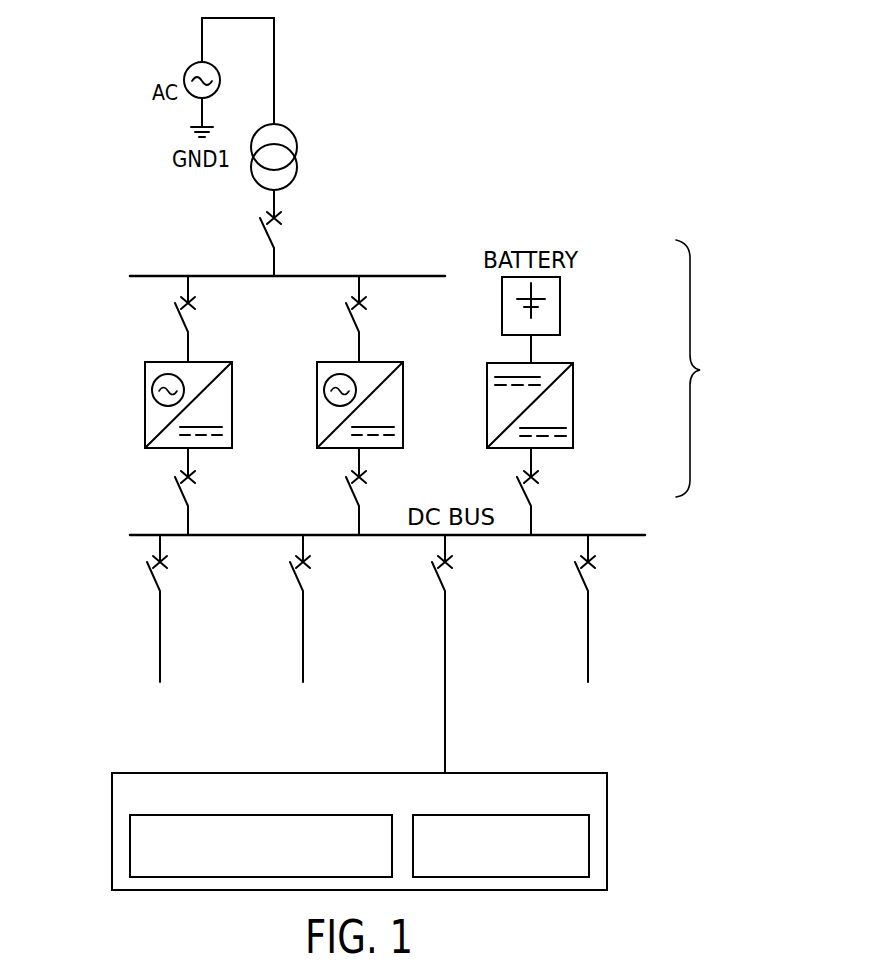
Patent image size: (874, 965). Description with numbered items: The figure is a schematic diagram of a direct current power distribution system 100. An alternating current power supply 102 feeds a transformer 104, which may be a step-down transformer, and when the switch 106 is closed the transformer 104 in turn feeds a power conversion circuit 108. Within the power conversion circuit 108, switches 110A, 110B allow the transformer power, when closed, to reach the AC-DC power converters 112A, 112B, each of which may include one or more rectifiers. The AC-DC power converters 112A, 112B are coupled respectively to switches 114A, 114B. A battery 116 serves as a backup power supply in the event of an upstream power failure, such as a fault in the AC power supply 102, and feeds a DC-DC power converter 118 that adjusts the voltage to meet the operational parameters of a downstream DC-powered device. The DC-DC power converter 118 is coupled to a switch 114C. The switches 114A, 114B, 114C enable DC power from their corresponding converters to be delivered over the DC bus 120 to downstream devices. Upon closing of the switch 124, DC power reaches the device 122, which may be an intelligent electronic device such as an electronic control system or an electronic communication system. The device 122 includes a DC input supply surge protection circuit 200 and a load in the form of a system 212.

The DC power distribution system 100 is at (672, 38).
The AC power supply 102 is at (197, 63).
The transformer 104 is at (295, 137).
The switch 106 is at (282, 236).
The power conversion circuit 108 is at (713, 368).
The switch 110A is at (192, 320).
The switch 110B is at (363, 320).
The AC-DC power converter 112A is at (232, 404).
The AC-DC power converter 112B is at (403, 404).
The switch 114A is at (192, 493).
The switch 114B is at (363, 493).
The switch 114C is at (535, 493).
The battery 116 is at (560, 300).
The DC-DC power converter 118 is at (573, 400).
The DC bus 120 is at (628, 535).
The device 122 is at (160, 773).
The switch 124 is at (447, 578).
The DC input supply surge protection circuit 200 is at (130, 848).
The system 212 is at (589, 846).